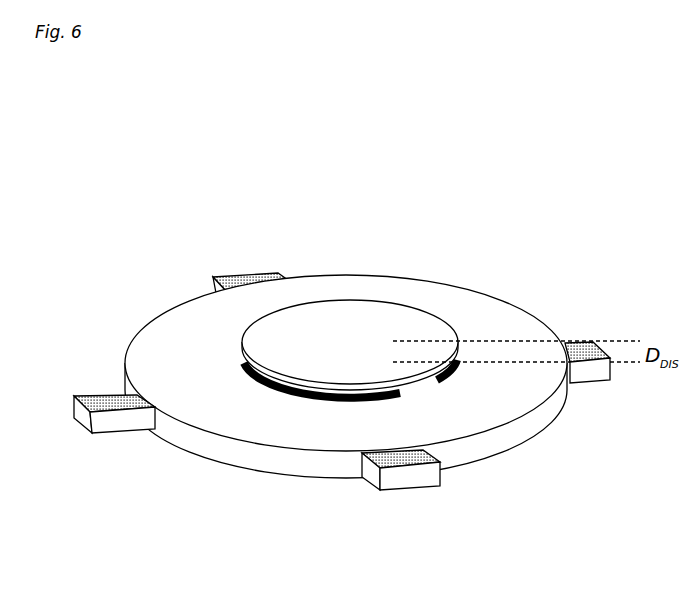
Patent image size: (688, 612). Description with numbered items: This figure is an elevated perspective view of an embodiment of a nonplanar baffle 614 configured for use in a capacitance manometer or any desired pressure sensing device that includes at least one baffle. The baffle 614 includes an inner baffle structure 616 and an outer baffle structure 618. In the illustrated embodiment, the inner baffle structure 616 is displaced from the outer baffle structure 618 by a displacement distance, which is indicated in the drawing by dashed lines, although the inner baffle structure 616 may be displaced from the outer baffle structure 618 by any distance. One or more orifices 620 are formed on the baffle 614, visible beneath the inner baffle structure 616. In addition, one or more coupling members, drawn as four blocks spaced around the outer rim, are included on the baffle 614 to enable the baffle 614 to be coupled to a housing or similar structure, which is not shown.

The nonplanar baffle 614 is at (505, 213).
The inner baffle structure 616 is at (370, 312).
The outer baffle structure 618 is at (522, 337).
The orifice 620 is at (270, 388).